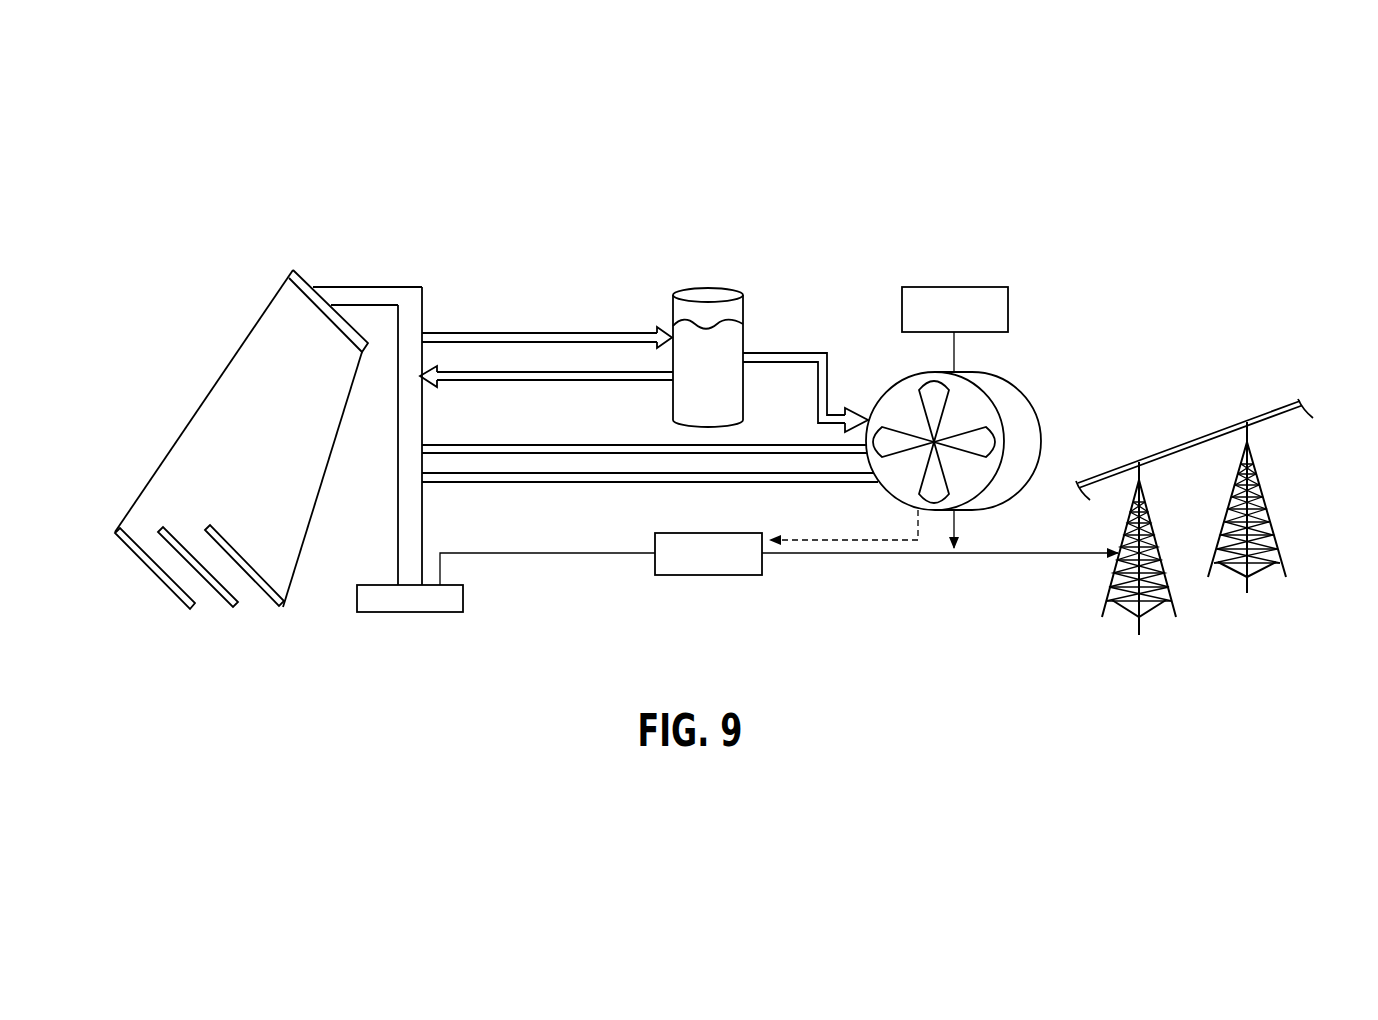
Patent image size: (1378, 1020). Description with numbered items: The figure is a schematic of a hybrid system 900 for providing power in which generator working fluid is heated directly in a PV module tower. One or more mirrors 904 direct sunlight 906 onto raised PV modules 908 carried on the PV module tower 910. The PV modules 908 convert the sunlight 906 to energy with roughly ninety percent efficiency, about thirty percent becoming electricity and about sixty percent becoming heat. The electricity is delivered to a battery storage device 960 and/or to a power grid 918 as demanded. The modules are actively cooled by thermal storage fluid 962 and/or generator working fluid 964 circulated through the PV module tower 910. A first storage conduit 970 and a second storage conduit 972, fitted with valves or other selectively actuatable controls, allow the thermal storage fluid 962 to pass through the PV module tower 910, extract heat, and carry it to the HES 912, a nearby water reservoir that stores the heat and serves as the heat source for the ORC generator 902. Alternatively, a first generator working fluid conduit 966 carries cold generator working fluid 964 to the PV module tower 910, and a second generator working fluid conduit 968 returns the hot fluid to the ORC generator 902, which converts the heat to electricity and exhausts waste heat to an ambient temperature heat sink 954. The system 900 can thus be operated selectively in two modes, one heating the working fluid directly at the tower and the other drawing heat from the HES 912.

The system 900 is at (1272, 178).
The ORC generator 902 is at (1042, 441).
The mirrors 904 is at (231, 607).
The sunlight 906 is at (233, 248).
The PV modules 908 is at (294, 266).
The PV module tower 910 is at (422, 423).
The HES 912 is at (745, 392).
The power grid 918 is at (1263, 518).
The ambient temperature heat sink 954 is at (955, 329).
The battery storage device 960 is at (779, 547).
The thermal storage fluid 962 is at (564, 331).
The generator working fluid 964 is at (580, 485).
The first generator working fluid conduit 966 is at (518, 444).
The second generator working fluid conduit 968 is at (525, 483).
The first storage conduit 970 is at (495, 333).
The second storage conduit 972 is at (580, 383).